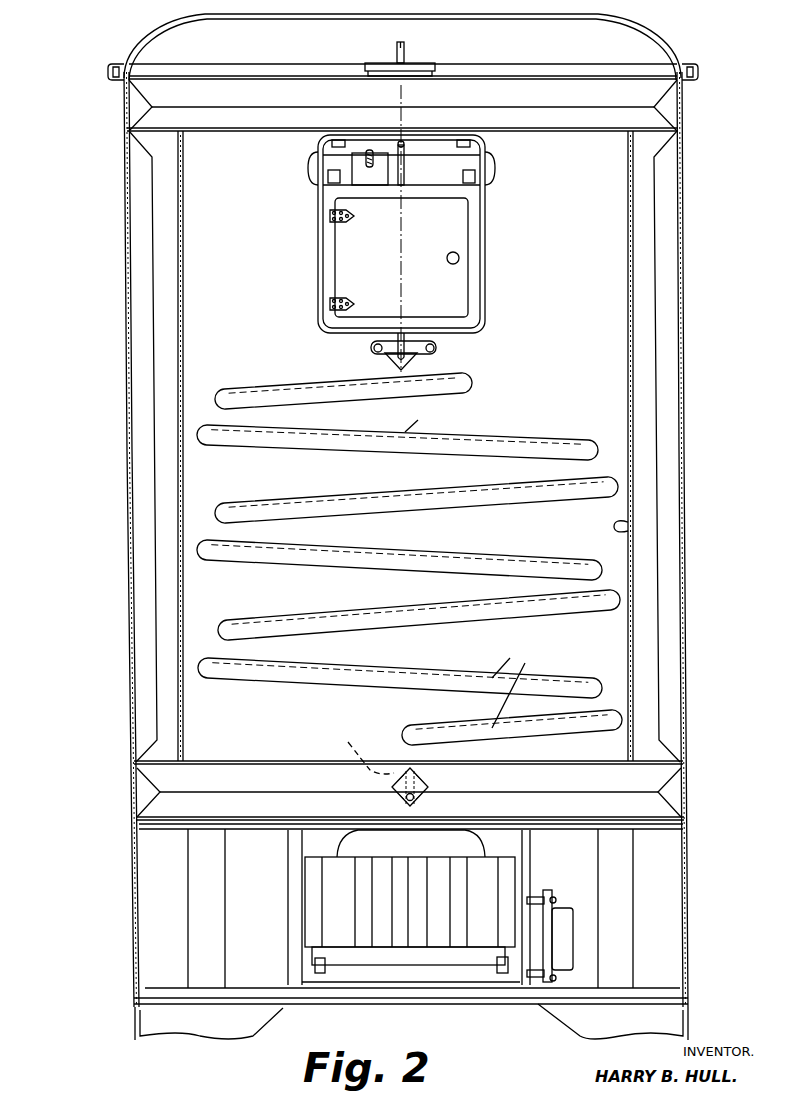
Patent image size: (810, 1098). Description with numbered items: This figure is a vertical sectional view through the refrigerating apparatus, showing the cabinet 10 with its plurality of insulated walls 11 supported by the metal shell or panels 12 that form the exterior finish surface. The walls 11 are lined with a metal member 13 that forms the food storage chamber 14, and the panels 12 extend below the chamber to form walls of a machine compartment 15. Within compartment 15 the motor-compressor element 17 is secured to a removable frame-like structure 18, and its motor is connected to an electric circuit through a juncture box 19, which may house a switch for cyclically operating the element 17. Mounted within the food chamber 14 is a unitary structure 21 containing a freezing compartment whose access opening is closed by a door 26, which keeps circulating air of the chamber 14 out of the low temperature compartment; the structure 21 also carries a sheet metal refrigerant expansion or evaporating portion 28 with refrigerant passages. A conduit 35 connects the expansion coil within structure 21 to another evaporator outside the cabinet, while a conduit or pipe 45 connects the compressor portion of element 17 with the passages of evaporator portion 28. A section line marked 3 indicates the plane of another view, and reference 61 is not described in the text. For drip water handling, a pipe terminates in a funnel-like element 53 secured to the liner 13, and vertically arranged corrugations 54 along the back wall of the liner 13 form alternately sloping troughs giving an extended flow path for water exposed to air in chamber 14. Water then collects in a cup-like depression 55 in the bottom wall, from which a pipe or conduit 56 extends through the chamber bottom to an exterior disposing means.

The section line of FIG. 3 is at (393, 97).
The cabinet 10 is at (125, 430).
The insulated walls 11 is at (657, 457).
The metal shell or metal panels 12 is at (126, 503).
The metal member 13 is at (628, 527).
The food storage chamber 14 is at (277, 483).
The machine compartment 15 is at (262, 886).
The motor-compressor element 17 is at (340, 920).
The frame-like structure 18 is at (525, 860).
The juncture box 19 is at (560, 918).
The unitary element or structure 21 is at (488, 243).
The door 26 is at (352, 238).
The refrigerant expansion or evaporating portion 28 is at (318, 270).
The conduit 35 is at (407, 52).
The conduit or pipe 45 is at (393, 52).
The funnel-like element 53 is at (414, 358).
The corrugations 54 is at (403, 398).
The cup-like depression 55 is at (361, 751).
The pipe or conduit 56 is at (430, 793).
The top cover 61 is at (141, 48).